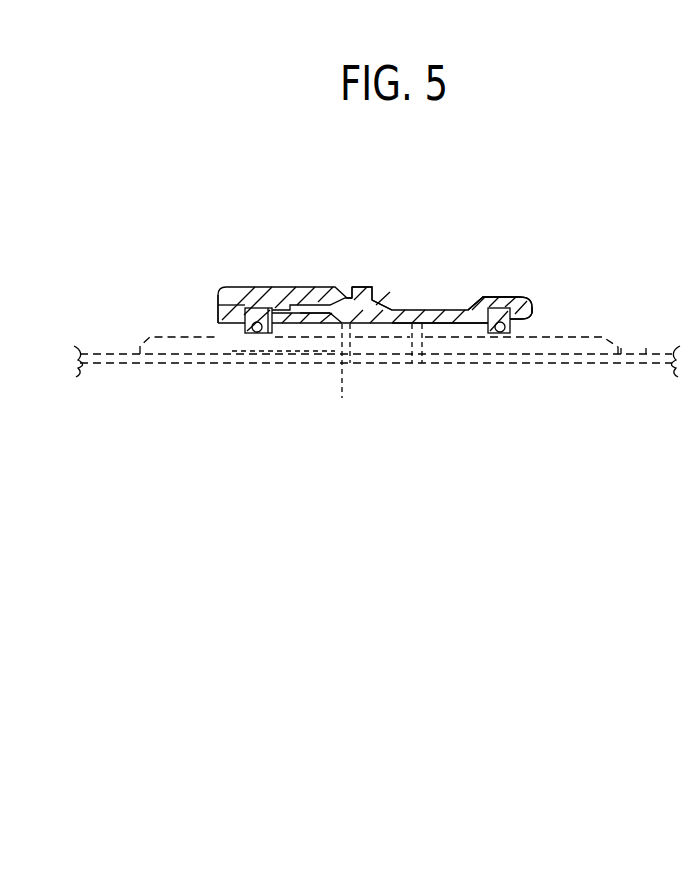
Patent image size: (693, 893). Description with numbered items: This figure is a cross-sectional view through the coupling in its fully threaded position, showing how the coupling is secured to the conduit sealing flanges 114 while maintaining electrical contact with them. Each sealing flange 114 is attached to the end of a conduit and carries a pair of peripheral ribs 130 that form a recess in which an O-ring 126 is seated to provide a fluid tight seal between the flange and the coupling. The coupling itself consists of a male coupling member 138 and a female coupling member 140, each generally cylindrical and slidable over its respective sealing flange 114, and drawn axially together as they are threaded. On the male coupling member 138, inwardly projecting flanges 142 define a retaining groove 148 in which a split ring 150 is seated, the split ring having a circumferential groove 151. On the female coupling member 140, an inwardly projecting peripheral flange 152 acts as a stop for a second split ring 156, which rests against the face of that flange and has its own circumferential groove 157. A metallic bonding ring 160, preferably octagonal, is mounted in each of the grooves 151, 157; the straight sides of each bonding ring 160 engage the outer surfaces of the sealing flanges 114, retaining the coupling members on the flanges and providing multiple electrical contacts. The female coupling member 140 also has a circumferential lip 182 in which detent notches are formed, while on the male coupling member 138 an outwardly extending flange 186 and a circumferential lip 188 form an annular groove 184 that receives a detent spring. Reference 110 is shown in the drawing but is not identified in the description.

The base plate 110 is at (107, 367).
The sealing flange 114 is at (188, 333).
The O-ring 126 is at (438, 338).
The peripheral ribs 130 is at (460, 310).
The male coupling member 138 is at (493, 294).
The female coupling member 140 is at (275, 287).
The inwardly projecting flanges 142 is at (485, 297).
The retaining groove 148 is at (507, 301).
The split ring 150 is at (508, 322).
The circumferential groove 151 is at (528, 313).
The peripheral flange 152 is at (247, 322).
The split ring 156 is at (240, 306).
The circumferential groove 157 is at (248, 302).
The bonding ring 160 is at (257, 334).
The circumferential lip 182 is at (330, 302).
The annular groove 184 is at (320, 325).
The outwardly extending flange 186 is at (385, 305).
The circumferential lip 188 is at (360, 287).